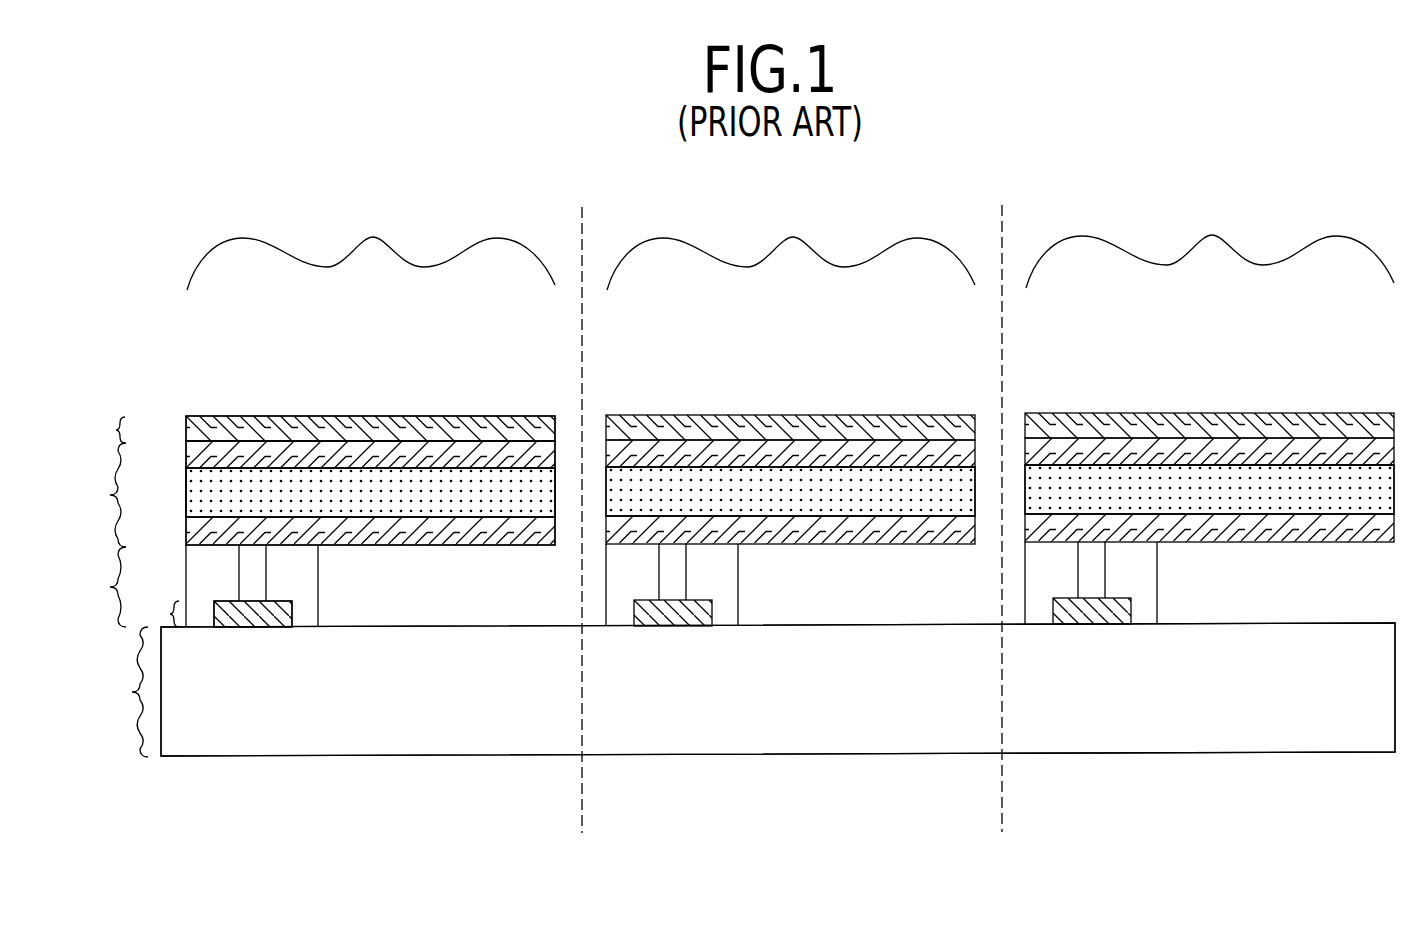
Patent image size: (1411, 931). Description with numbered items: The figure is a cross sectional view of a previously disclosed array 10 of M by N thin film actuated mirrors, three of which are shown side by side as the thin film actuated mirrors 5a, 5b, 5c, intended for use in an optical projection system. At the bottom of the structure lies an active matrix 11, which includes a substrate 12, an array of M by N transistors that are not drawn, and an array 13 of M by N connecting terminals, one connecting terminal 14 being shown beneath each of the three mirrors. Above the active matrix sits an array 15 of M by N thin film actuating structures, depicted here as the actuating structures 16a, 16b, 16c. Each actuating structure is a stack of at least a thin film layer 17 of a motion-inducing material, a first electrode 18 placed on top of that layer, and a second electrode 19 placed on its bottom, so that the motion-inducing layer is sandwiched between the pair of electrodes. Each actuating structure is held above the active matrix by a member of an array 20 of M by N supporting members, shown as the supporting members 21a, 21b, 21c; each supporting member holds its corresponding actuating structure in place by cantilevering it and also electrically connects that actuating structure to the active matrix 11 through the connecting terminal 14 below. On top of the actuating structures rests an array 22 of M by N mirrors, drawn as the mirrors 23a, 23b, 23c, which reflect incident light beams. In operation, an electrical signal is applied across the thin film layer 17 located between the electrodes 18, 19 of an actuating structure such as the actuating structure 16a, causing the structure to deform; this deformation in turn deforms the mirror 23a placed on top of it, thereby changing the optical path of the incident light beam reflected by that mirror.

The array of thin film actuated mirrors 10 is at (1127, 174).
The thin film actuated mirror 5a is at (371, 244).
The thin film actuated mirror 5b is at (791, 244).
The thin film actuated mirror 5c is at (1210, 242).
The active matrix 11 is at (742, 690).
The substrate 12 is at (425, 698).
The array of connecting terminals 13 is at (212, 612).
The connecting terminal 14 is at (252, 617).
The array of thin film actuating structures 15 is at (311, 494).
The thin film actuating structure 16a is at (487, 475).
The thin film actuating structure 16b is at (790, 434).
The thin film actuating structure 16c is at (1209, 433).
The thin film layer of motion-inducing material 17 is at (430, 497).
The first electrode 18 is at (322, 453).
The second electrode 19 is at (526, 533).
The array of supporting members 20 is at (612, 584).
The supporting member 21a is at (310, 567).
The supporting member 21b is at (759, 572).
The supporting member 21c is at (1177, 570).
The array of mirrors 22 is at (316, 432).
The mirror 23a is at (245, 428).
The mirror 23b is at (790, 379).
The mirror 23c is at (1209, 378).